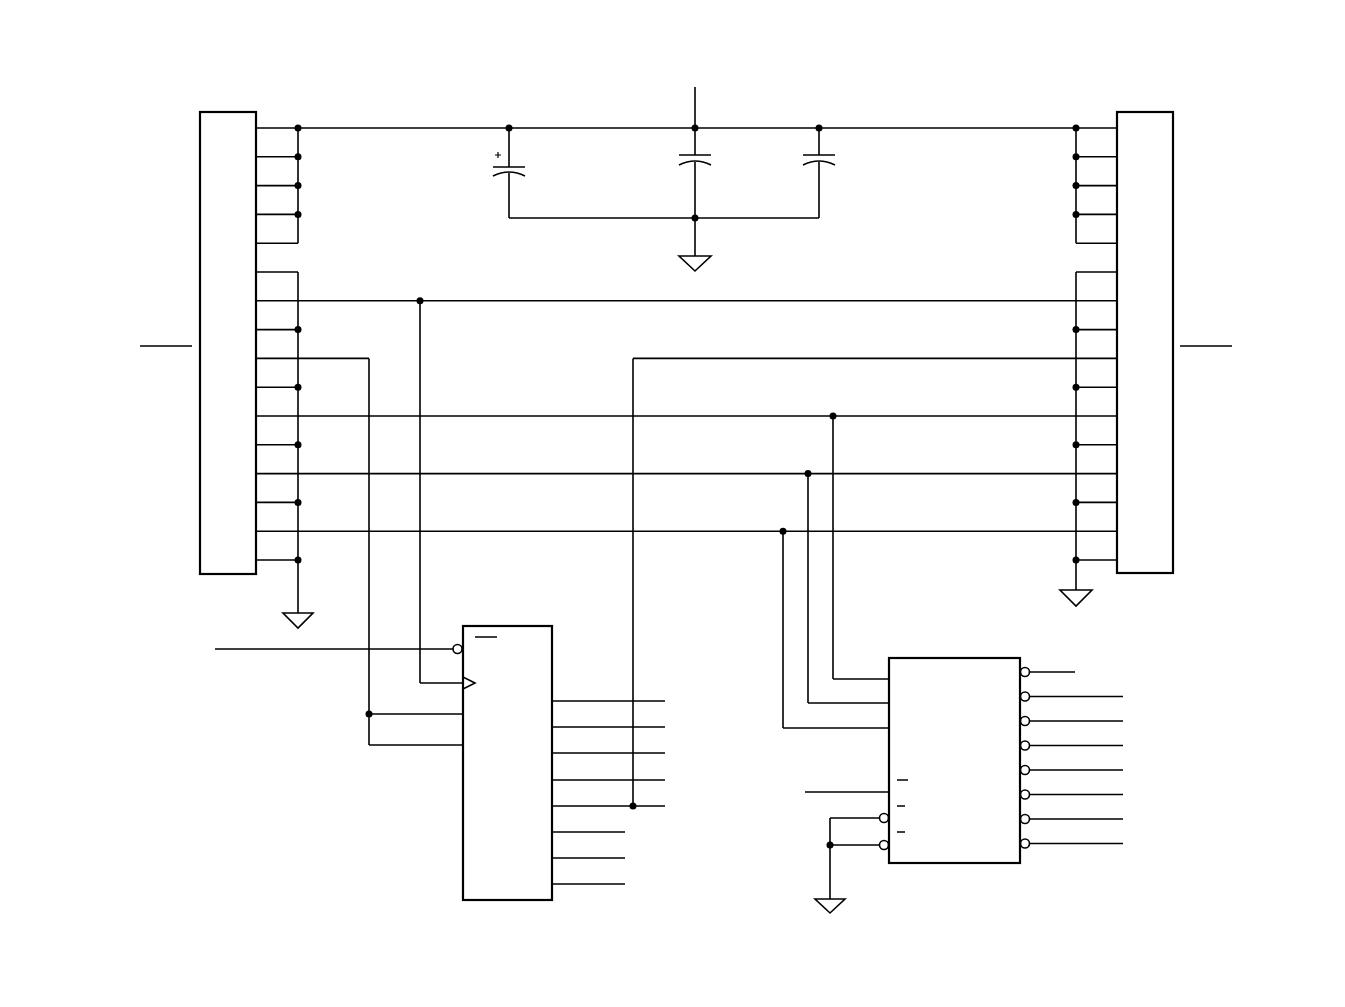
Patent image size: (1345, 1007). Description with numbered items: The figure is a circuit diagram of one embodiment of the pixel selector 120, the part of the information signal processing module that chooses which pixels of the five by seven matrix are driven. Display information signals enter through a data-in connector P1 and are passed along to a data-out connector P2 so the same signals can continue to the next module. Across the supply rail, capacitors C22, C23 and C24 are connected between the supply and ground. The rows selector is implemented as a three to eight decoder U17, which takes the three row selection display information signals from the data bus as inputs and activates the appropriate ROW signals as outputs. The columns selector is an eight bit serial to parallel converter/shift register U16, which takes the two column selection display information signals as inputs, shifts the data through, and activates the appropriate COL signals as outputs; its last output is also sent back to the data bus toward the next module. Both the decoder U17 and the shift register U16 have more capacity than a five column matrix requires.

The pixel selector 120 is at (1342, 98).
The data in connector P1 is at (228, 330).
The data out connector P2 is at (1145, 330).
The 47 uF electrolytic capacitor C22 is at (548, 173).
The 0.1 uF capacitor C23 is at (714, 173).
The 0.1 uF capacitor C24 is at (837, 173).
The eight bit serial to parallel converter/shift register U16 is at (510, 740).
The three to eight decoder U17 is at (957, 735).